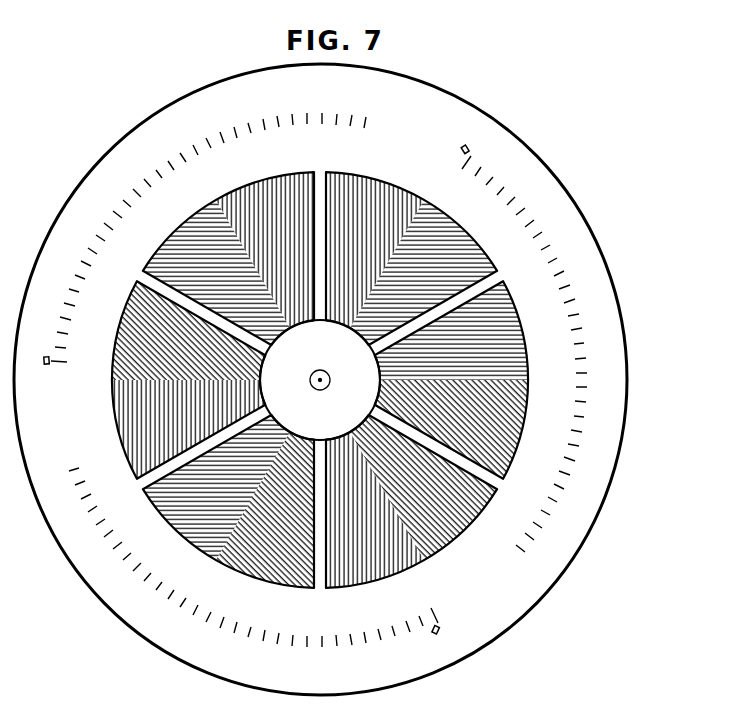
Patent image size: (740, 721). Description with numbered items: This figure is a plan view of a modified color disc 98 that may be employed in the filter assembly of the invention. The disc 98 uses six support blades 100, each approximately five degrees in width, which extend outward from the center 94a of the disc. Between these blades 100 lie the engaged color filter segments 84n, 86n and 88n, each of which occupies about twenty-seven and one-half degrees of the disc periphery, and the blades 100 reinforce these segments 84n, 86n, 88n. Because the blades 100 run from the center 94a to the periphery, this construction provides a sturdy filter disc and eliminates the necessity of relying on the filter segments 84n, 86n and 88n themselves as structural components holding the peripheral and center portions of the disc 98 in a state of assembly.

The color filter segment 84n is at (298, 253).
The color filter segment 86n is at (240, 285).
The color filter segment 88n is at (196, 355).
The center 94a is at (338, 419).
The modified color disc 98 is at (608, 252).
The support blade 100 is at (320, 172).